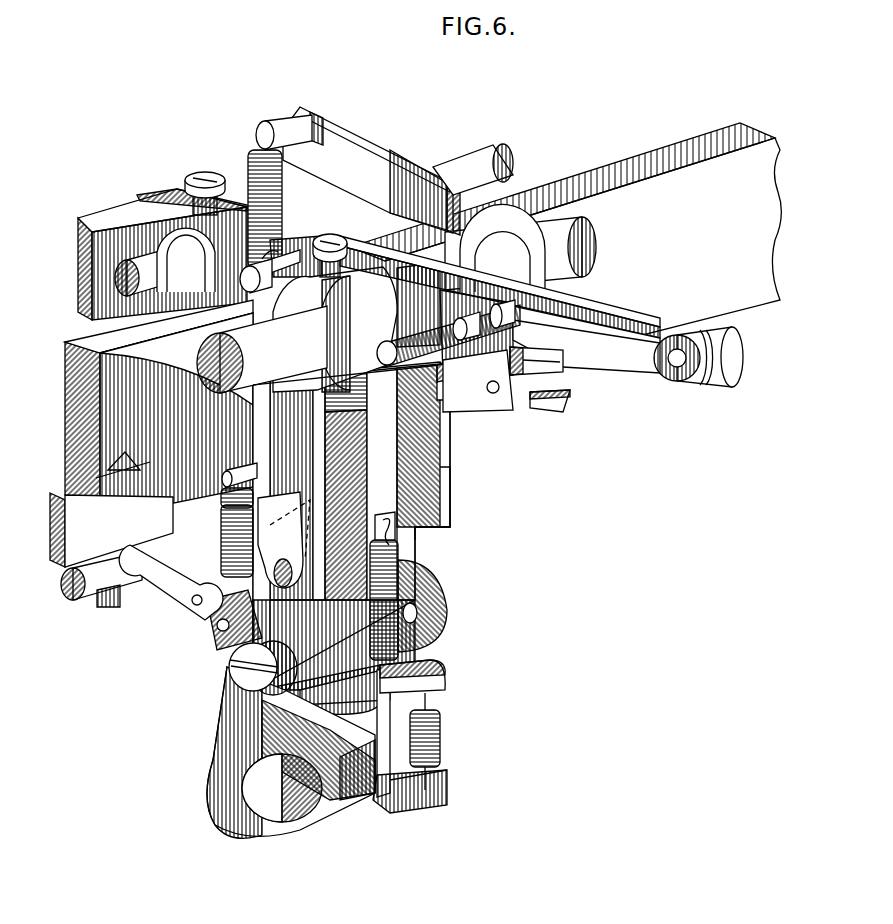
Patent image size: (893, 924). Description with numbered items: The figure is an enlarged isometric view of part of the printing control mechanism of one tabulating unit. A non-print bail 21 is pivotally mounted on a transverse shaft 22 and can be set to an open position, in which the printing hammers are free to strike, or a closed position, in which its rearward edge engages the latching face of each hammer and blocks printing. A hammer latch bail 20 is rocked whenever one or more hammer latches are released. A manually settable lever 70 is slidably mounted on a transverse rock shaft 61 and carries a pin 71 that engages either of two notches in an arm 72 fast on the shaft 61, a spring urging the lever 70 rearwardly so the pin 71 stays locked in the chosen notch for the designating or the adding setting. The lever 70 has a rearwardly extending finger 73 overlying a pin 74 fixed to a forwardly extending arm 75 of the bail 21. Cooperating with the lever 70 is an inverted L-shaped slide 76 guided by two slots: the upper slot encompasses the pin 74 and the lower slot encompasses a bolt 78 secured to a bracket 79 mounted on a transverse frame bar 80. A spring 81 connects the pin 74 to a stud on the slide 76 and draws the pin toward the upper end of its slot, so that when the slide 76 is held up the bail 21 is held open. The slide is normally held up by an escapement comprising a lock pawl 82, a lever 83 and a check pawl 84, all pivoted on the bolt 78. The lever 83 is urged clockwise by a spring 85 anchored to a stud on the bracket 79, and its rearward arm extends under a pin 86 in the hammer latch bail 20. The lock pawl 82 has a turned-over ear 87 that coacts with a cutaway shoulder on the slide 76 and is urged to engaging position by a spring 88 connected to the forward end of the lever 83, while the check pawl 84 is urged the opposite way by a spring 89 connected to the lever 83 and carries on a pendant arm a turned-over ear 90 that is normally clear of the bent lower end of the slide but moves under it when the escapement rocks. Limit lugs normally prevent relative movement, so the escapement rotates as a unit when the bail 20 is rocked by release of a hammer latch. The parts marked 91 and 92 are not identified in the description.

The hammer latch bail 20 is at (56, 556).
The non-print bail 21 is at (141, 218).
The transverse shaft 22 is at (140, 263).
The transverse rock shaft 61 is at (584, 253).
The manually settable lever 70 is at (641, 360).
The pin 71 is at (558, 295).
The arm 72 is at (446, 410).
The rearwardly extending finger 73 is at (278, 240).
The pin 74 is at (280, 272).
The forwardly extending arm 75 is at (247, 203).
The inverted L-shaped slide 76 is at (381, 155).
The bolt 78 is at (241, 676).
The bracket 79 is at (357, 490).
The transverse frame bar 80 is at (761, 297).
The spring 81 is at (253, 173).
The lock pawl 82 is at (384, 538).
The lever 83 is at (433, 673).
The check pawl 84 is at (357, 800).
The spring 85 is at (223, 503).
The pin 86 is at (230, 588).
The turned-over ear 87 is at (236, 527).
The spring 88 is at (394, 578).
The spring 89 is at (441, 740).
The turned over ear 90 is at (258, 818).
The flange 91 is at (530, 400).
The guide 92 is at (553, 373).